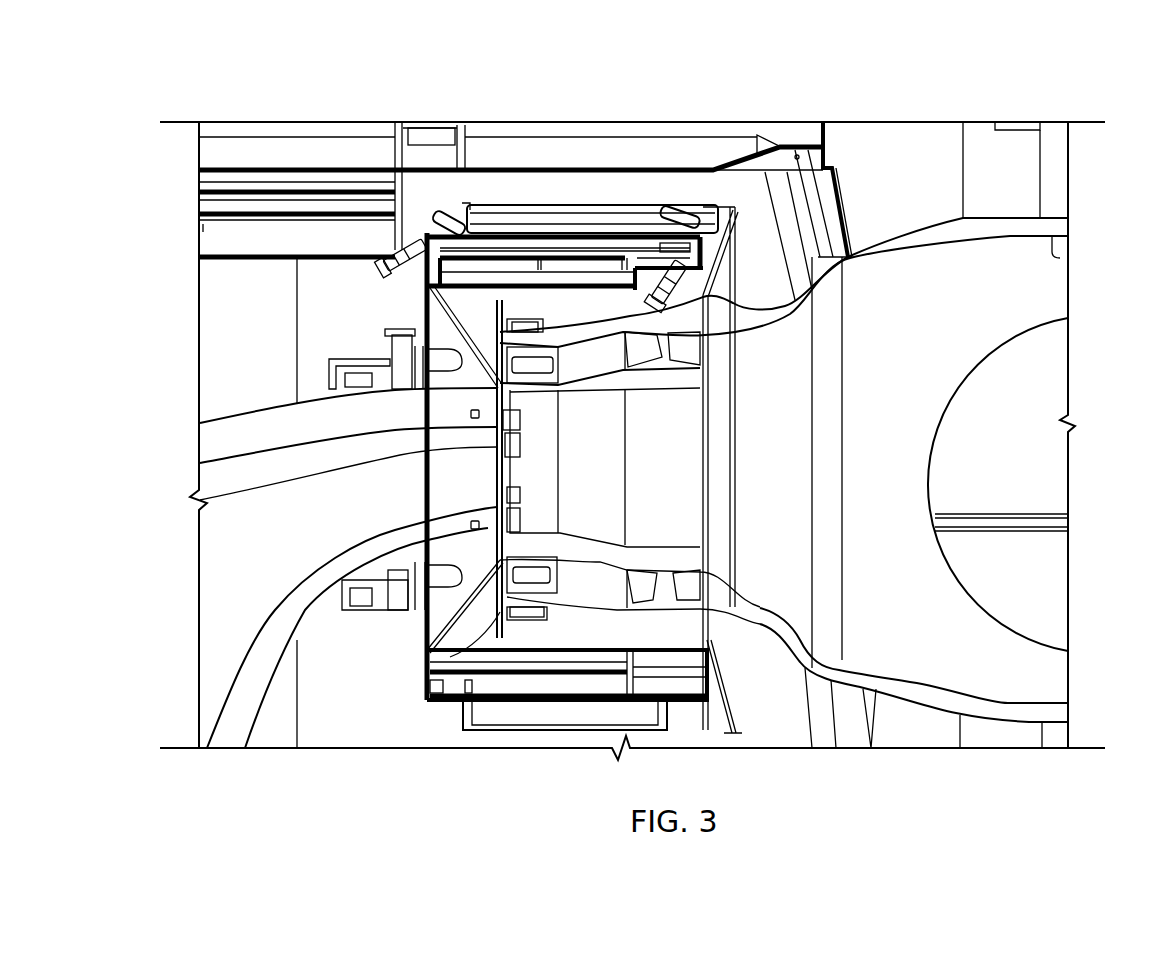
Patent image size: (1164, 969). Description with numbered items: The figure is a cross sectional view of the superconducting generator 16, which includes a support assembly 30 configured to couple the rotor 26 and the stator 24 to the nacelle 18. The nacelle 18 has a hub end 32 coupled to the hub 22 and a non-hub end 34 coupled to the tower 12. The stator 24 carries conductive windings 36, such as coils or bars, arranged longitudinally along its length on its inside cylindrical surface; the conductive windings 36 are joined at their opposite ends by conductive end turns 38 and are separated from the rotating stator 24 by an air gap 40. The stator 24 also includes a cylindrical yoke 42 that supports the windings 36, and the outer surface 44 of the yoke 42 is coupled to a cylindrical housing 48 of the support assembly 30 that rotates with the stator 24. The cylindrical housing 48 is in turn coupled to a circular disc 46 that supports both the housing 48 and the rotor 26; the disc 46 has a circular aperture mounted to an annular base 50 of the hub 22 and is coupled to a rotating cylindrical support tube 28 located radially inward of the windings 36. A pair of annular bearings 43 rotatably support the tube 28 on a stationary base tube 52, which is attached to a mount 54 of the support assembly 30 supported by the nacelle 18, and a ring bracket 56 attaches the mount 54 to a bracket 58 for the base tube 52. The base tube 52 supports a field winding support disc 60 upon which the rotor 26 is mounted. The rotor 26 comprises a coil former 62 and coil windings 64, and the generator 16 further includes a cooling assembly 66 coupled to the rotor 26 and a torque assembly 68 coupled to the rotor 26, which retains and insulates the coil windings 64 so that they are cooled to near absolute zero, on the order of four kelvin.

The tower 12 is at (298, 716).
The superconducting generator 16 is at (312, 76).
The nacelle 18 is at (1012, 190).
The hub 22 is at (1052, 257).
The stator 24 is at (522, 222).
The rotor 26 is at (677, 200).
The rotating cylindrical support tube 28 is at (673, 323).
The support assembly 30 is at (708, 300).
The hub end 32 is at (1074, 195).
The non-hub end 34 is at (350, 295).
The conductive windings 36 is at (491, 228).
The conductive end turns 38 is at (414, 208).
The air gap 40 is at (622, 240).
The cylindrical yoke 42 is at (573, 225).
The annular bearings 43 is at (678, 350).
The outer surface 44 is at (648, 212).
The circular disc 46 is at (800, 157).
The cylindrical housing 48 is at (740, 200).
The annular base 50 is at (690, 280).
The stationary base tube 52 is at (495, 397).
The mount 54 is at (430, 447).
The ring bracket 56 is at (495, 490).
The bracket 58 is at (334, 582).
The field winding support disc 60 is at (430, 655).
The coil former 62 is at (400, 228).
The coil windings 64 is at (423, 283).
The cooling assembly 66 is at (395, 190).
The torque assembly 68 is at (492, 300).